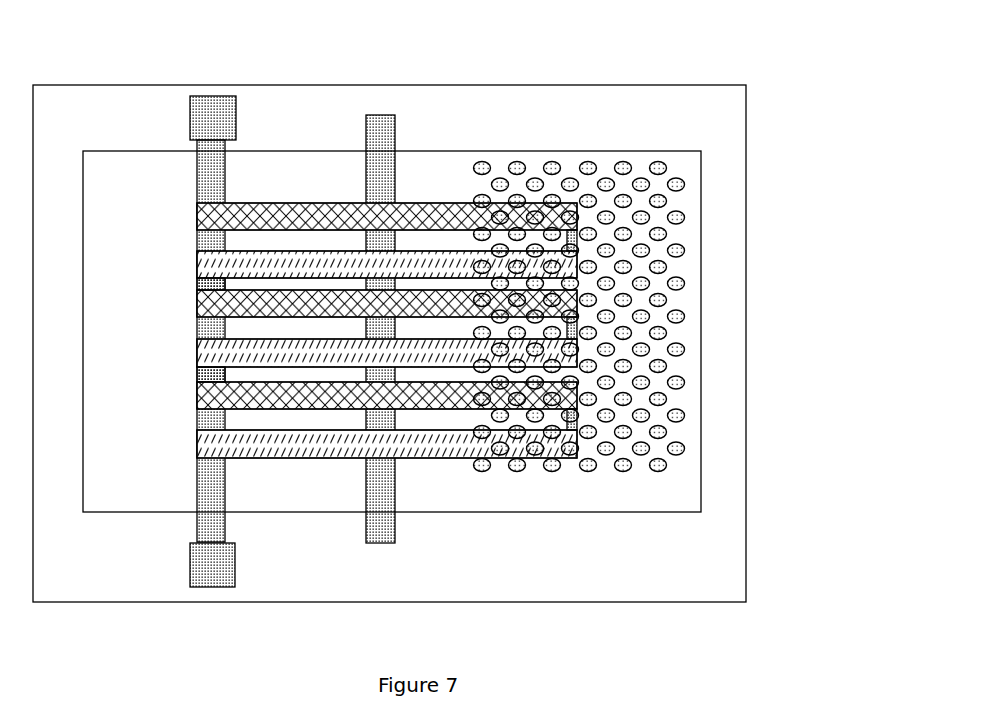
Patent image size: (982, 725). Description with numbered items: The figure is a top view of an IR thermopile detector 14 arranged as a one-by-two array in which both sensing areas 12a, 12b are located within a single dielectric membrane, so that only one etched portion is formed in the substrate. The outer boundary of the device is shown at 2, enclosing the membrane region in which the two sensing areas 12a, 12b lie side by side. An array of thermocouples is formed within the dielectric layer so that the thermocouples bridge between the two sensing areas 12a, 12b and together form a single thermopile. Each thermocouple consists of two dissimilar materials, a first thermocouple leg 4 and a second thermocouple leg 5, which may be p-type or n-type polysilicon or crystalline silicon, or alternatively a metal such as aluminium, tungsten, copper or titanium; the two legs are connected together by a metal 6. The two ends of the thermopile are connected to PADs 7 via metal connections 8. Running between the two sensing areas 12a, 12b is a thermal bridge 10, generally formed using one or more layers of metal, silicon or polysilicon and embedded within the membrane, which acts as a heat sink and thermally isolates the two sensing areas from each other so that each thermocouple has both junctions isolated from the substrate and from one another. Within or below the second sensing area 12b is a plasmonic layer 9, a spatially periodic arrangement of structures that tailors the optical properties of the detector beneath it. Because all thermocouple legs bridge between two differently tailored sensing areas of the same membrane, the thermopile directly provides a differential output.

The substrate 2 is at (598, 33).
The thermocouple leg 4 is at (260, 402).
The thermocouple leg 5 is at (305, 442).
The metal 6 is at (197, 380).
The PAD 7 is at (213, 562).
The metal connection 8 is at (205, 522).
The plasmonic layer 9 is at (482, 202).
The thermal bridge 10 is at (380, 507).
The first sensing area 12a is at (140, 182).
The second sensing area 12b is at (540, 172).
The detector 14 is at (410, 317).